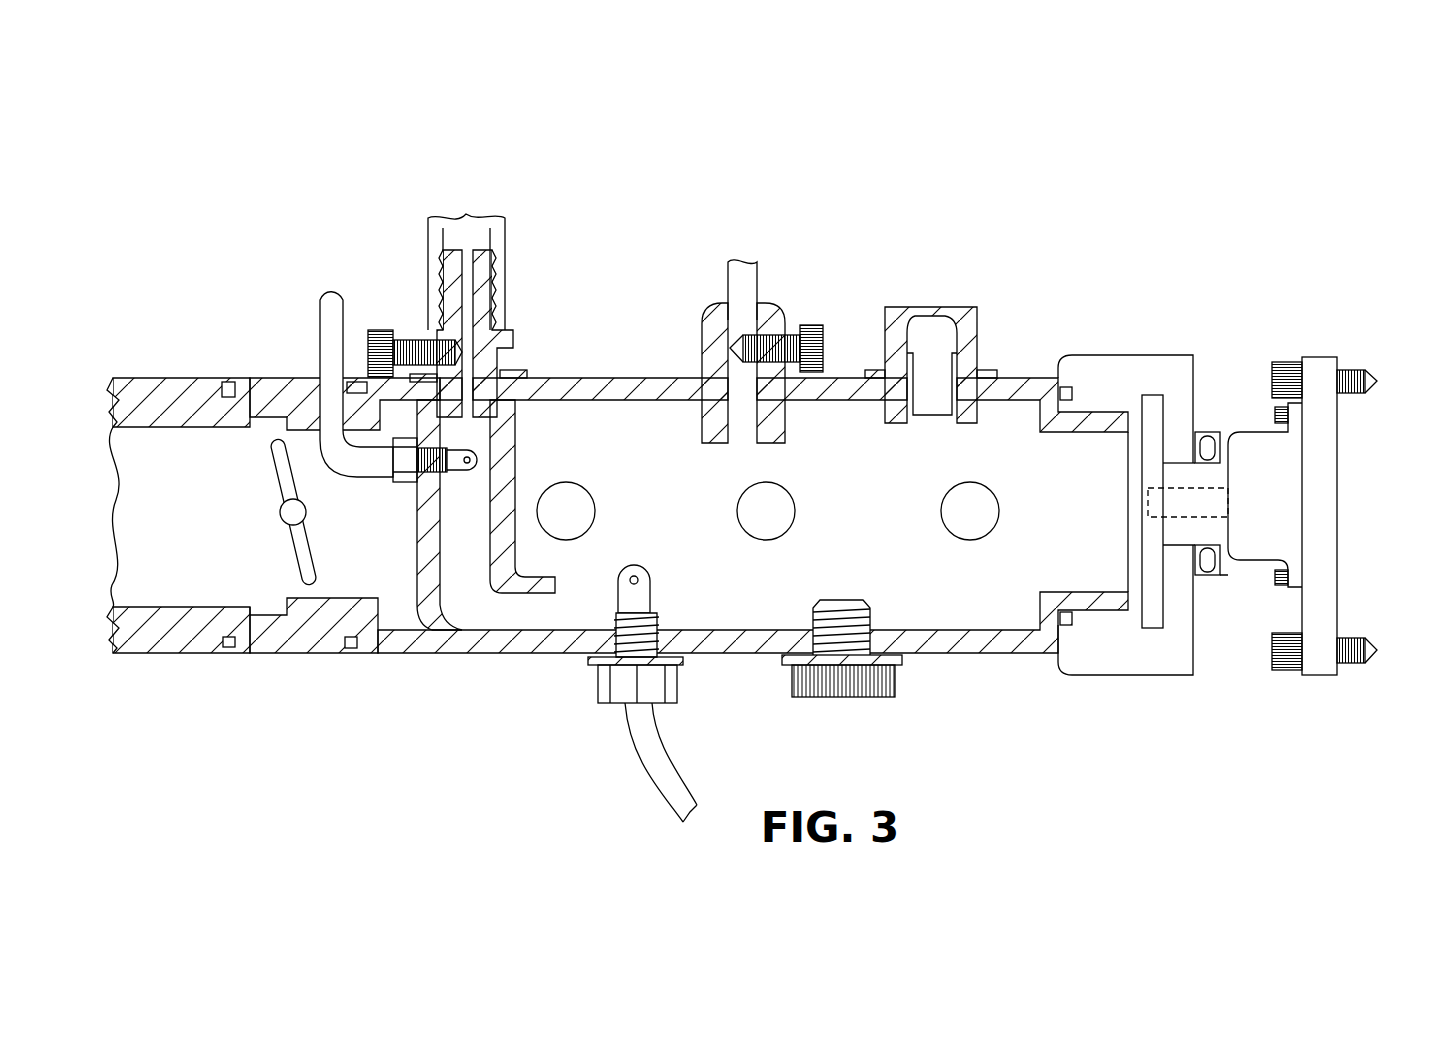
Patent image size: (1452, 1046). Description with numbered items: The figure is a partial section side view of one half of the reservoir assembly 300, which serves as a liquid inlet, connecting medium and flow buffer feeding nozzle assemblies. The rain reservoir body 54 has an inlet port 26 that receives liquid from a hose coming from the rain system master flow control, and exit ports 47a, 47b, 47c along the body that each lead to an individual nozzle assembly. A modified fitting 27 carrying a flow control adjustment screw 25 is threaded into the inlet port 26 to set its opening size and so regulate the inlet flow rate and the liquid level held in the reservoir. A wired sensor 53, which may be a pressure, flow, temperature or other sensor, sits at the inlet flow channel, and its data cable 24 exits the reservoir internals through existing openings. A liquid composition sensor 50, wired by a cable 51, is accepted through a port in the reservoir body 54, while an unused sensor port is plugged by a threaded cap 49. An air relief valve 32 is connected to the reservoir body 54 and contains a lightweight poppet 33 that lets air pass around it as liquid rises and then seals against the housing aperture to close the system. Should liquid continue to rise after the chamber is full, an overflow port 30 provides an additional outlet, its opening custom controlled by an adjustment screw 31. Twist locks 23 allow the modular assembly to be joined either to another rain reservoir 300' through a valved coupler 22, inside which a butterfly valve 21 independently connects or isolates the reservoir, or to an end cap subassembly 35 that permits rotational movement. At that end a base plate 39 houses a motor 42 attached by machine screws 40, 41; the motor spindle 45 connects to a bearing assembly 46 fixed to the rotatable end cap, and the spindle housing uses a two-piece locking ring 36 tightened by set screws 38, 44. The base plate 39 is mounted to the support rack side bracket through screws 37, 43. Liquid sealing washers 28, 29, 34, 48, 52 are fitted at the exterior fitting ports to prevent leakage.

The reservoir assembly 300 is at (874, 353).
The another rain reservoir 300' is at (178, 478).
The butterfly valve 21 is at (270, 485).
The valved coupler 22 is at (258, 657).
The twist locks 23 is at (352, 392).
The data cable 24 is at (318, 320).
The flow control adjustment screw 25 is at (381, 326).
The inlet port 26 is at (466, 236).
The modified fitting 27 is at (487, 245).
The liquid sealing washer 28 is at (523, 375).
The liquid sealing washer 29 is at (697, 373).
The overflow port 30 is at (742, 302).
The adjustment screw 31 is at (806, 323).
The air relief valve 32 is at (893, 306).
The poppet 33 is at (935, 330).
The liquid sealing washer 34 is at (985, 370).
The end cap subassembly 35 is at (1158, 352).
The two-piece locking ring 36 is at (1208, 430).
The screw 37 is at (1288, 356).
The set screw 38 is at (1212, 447).
The base plate 39 is at (1320, 460).
The machine screw 40 is at (1268, 412).
The machine screw 41 is at (1292, 578).
The motor 42 is at (1285, 510).
The screw 43 is at (1285, 673).
The set screw 44 is at (1207, 572).
The spindle 45 is at (1180, 520).
The bearing assembly 46 is at (1152, 630).
The exit port 47a is at (566, 542).
The exit port 47b is at (766, 542).
The exit port 47c is at (971, 542).
The liquid sealing washer 48 is at (898, 668).
The threaded cap 49 is at (840, 699).
The liquid composition sensor 50 is at (656, 590).
The cable 51 is at (647, 787).
The liquid sealing washer 52 is at (592, 667).
The sensor 53 is at (461, 480).
The rain reservoir body 54 is at (392, 657).